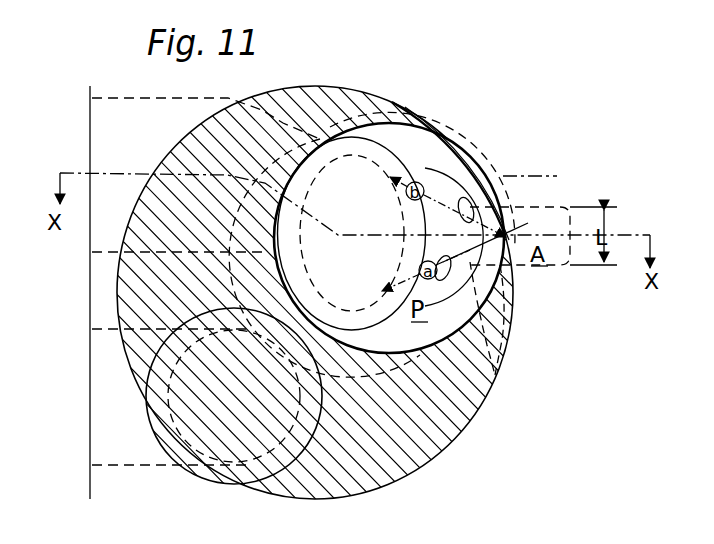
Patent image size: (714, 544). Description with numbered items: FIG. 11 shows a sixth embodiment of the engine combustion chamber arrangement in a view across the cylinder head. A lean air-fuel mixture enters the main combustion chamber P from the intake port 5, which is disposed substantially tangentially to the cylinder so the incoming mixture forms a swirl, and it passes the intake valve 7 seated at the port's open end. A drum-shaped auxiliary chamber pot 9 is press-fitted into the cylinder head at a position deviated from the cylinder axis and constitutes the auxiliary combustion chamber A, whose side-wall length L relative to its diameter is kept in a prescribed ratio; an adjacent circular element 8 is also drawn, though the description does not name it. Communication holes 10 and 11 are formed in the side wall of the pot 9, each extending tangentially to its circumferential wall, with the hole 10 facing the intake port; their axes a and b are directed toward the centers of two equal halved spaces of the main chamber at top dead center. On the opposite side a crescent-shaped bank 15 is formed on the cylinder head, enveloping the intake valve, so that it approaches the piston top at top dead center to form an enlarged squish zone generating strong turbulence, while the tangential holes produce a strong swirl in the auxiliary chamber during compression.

The intake port 5 is at (90, 130).
The intake valve 7 is at (420, 132).
The cylindrical recess 8 is at (200, 427).
The auxiliary chamber pot 9 is at (462, 162).
The communication hole 10 is at (494, 379).
The communication hole 11 is at (497, 172).
The crescent-shaped bank 15 is at (394, 465).